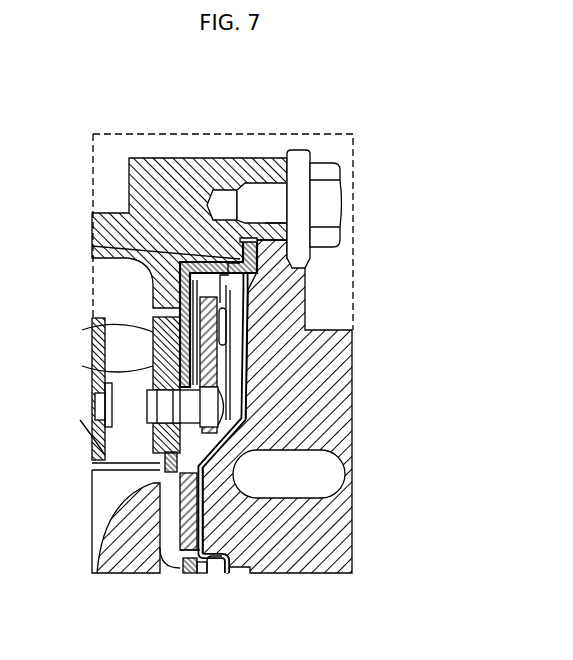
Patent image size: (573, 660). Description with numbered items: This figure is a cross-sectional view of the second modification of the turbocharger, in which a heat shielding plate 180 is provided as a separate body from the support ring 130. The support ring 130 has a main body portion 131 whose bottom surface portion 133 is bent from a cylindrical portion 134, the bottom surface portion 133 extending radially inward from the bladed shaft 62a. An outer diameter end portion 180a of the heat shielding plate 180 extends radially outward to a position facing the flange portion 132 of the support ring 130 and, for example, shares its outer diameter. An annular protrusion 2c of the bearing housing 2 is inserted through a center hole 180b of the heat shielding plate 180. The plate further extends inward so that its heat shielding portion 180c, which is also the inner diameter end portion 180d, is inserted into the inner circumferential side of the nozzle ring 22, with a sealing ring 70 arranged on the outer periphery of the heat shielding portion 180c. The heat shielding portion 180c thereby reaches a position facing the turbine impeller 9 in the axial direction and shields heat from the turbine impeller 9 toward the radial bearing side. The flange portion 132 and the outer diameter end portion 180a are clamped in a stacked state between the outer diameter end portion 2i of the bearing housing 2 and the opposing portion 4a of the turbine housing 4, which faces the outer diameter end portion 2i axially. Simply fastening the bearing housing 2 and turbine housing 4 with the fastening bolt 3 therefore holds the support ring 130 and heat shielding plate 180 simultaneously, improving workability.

The bearing housing 2 is at (306, 265).
The annular protrusion 2c is at (180, 550).
The outer diameter end portion 2i is at (270, 223).
The fastening bolt 3 is at (337, 162).
The turbine housing 4 is at (129, 187).
The opposing portion 4a is at (92, 246).
The turbine impeller 9 is at (100, 513).
The nozzle ring 22 is at (153, 357).
The bladed shaft 62a is at (190, 403).
The sealing ring 70 is at (122, 452).
The support ring 130 is at (150, 330).
The main body portion 131 is at (232, 300).
The flange portion 132 is at (204, 164).
The bottom surface portion 133 is at (202, 358).
The cylindrical portion 134 is at (262, 296).
The heat shielding plate 180 is at (225, 472).
The outer diameter end portion 180a is at (242, 239).
The center hole 180b is at (172, 572).
The heat shielding portion 180c is at (222, 552).
The inner diameter end portion 180d is at (183, 562).